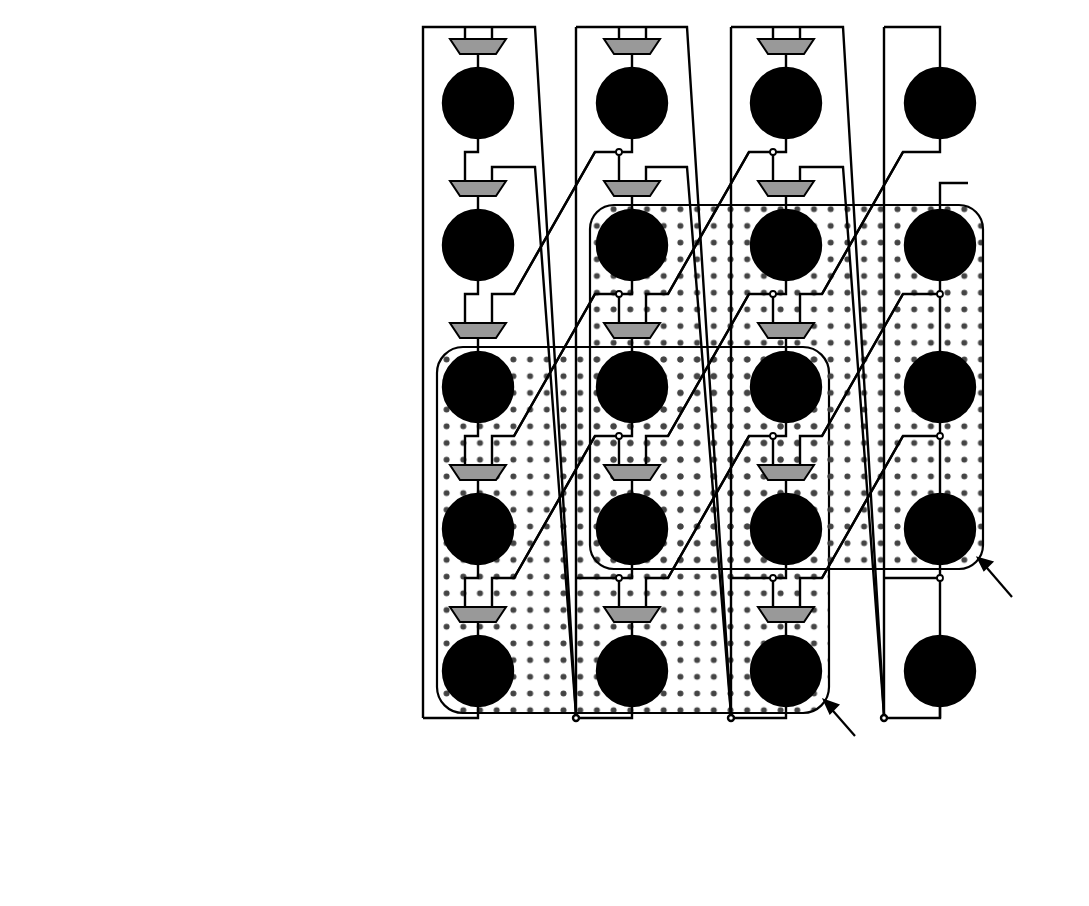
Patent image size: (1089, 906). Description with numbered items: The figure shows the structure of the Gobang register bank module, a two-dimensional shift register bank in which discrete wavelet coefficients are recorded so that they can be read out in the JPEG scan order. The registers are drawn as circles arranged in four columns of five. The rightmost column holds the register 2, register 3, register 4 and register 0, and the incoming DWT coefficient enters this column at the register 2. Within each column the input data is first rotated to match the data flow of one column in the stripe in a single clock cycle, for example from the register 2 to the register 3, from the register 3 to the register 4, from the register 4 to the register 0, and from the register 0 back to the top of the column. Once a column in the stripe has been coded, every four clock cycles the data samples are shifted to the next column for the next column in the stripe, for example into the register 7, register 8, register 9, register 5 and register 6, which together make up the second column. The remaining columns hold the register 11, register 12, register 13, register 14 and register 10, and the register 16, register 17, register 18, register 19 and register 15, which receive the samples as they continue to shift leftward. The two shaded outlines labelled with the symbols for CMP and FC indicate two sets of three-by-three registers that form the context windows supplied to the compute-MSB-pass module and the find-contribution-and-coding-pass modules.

The register W0 0 is at (940, 671).
The register W2 2 is at (940, 245).
The register W3 3 is at (940, 387).
The register W4 4 is at (940, 529).
The register W5 5 is at (786, 671).
The register W6 6 is at (786, 103).
The register W7 7 is at (786, 245).
The register W8 8 is at (786, 387).
The register W9 9 is at (786, 529).
The register W10 10 is at (632, 671).
The register W11 11 is at (632, 103).
The register W12 12 is at (632, 245).
The register W13 13 is at (632, 387).
The register W14 14 is at (632, 529).
The register W15 15 is at (478, 671).
The register W16 16 is at (478, 103).
The register W17 17 is at (478, 245).
The register W18 18 is at (478, 387).
The register W19 19 is at (478, 529).